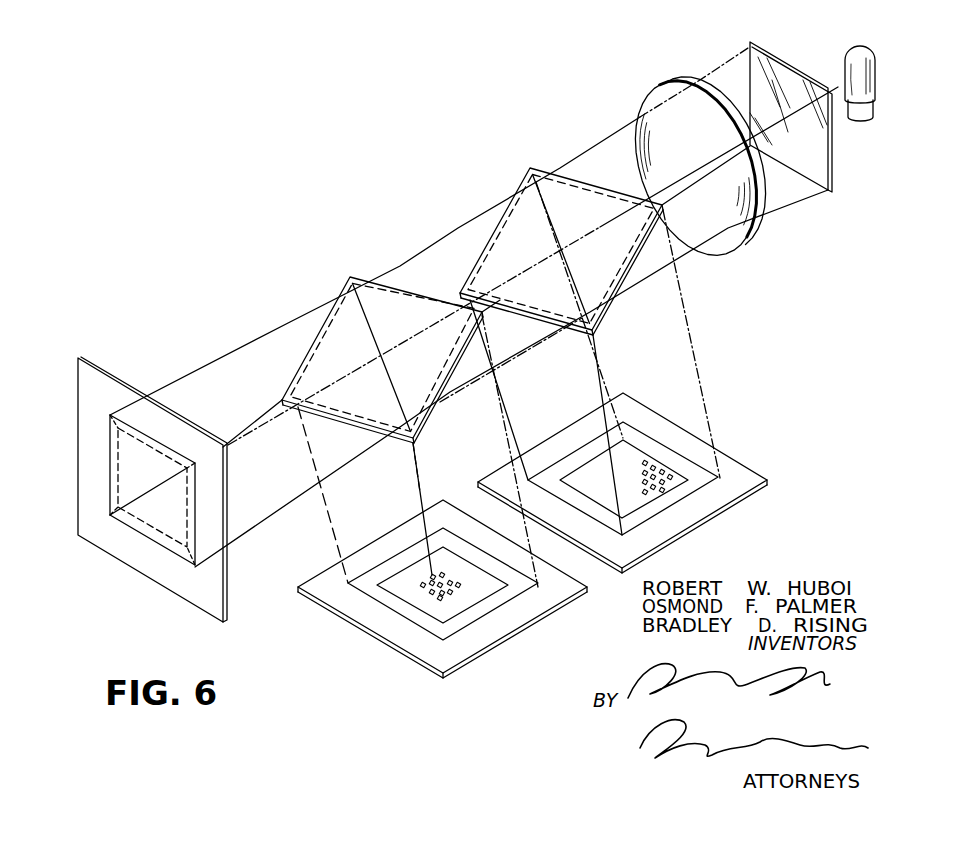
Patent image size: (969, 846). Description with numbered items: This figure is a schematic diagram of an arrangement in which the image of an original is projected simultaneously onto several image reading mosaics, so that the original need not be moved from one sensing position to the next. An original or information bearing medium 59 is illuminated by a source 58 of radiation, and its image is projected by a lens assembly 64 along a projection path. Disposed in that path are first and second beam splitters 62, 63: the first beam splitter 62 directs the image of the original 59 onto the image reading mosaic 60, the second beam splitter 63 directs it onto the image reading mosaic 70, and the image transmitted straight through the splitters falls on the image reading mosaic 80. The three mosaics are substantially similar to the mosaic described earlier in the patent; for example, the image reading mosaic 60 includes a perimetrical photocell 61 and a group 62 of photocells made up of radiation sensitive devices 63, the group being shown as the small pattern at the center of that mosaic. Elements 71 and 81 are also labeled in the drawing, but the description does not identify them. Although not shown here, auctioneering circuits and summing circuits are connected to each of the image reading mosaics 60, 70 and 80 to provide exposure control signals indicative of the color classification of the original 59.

The source of radiation 58 is at (866, 15).
The original or information bearing medium 59 is at (757, 68).
The image reading mosaic 60 is at (637, 474).
The perimetrical photocell 61 is at (737, 468).
The first beam splitter 62 is at (530, 168).
The second beam splitter 63 is at (372, 240).
The lens assembly 64 is at (642, 108).
The image reading mosaic 70 is at (442, 608).
The stage support platform 71 is at (352, 608).
The image reading mosaic 80 is at (118, 368).
The screen aperture 81 is at (185, 415).